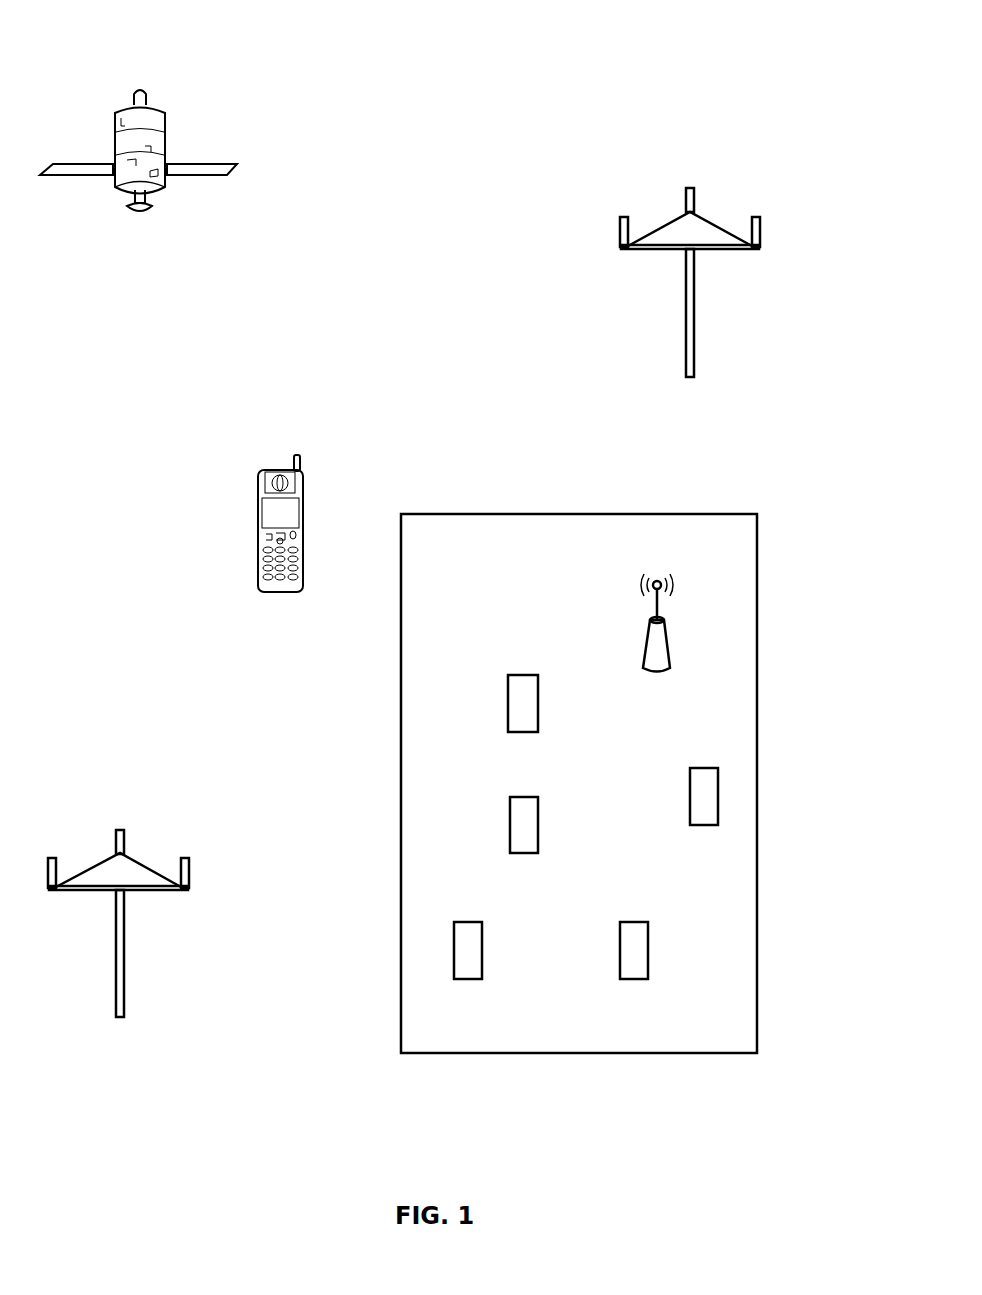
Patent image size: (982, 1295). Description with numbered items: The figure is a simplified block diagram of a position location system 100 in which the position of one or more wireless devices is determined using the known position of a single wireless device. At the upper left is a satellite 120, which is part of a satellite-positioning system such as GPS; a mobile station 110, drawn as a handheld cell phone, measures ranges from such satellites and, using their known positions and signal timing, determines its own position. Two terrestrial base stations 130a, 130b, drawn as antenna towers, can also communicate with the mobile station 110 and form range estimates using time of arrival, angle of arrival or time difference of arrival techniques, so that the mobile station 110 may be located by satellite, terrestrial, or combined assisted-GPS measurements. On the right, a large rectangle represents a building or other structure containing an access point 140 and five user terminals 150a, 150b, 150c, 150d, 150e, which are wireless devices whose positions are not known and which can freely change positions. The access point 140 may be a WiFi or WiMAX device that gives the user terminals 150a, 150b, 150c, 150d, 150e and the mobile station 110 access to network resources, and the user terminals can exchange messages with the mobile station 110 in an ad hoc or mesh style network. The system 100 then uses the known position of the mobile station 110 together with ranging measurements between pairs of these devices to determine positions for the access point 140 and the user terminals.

The position location system 100 is at (716, 68).
The mobile station 110 is at (258, 508).
The satellite 120 is at (235, 160).
The base station 130a is at (186, 858).
The base station 130b is at (626, 216).
The access point 140 is at (650, 615).
The user terminal 150a is at (522, 672).
The user terminal 150b is at (703, 768).
The user terminal 150c is at (539, 808).
The user terminal 150d is at (633, 922).
The user terminal 150e is at (483, 935).